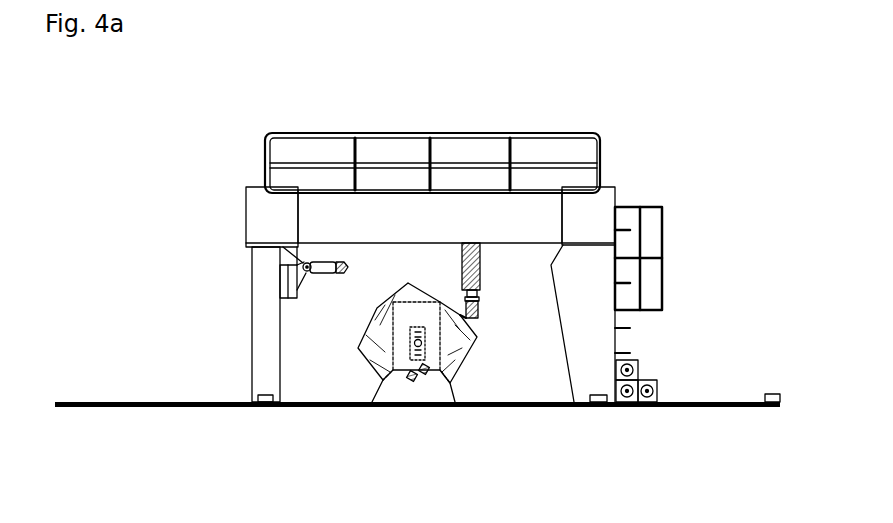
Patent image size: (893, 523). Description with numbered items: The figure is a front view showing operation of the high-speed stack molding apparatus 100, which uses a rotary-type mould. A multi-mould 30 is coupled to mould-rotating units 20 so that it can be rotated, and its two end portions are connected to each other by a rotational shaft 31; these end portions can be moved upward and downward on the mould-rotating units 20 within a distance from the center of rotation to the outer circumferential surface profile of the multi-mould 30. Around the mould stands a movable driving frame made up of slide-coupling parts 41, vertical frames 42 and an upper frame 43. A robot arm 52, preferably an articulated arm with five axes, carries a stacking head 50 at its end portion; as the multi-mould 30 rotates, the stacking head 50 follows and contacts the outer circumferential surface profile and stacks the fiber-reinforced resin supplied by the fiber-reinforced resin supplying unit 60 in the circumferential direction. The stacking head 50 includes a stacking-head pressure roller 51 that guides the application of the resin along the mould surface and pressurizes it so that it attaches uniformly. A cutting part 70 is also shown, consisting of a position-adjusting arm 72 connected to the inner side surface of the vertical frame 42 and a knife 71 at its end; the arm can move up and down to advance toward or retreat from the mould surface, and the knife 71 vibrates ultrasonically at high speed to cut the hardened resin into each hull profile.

The high-speed stack molding apparatus 100 is at (234, 106).
The mould-rotating unit 20 is at (435, 395).
The multi-mould 30 is at (470, 375).
The rotational shaft 31 is at (407, 343).
The slide-coupling part 41 is at (268, 407).
The vertical frame 42 is at (265, 365).
The upper frame 43 is at (533, 207).
The stacking head 50 is at (500, 263).
The stacking-head pressure roller 51 is at (466, 318).
The robot arm 52 is at (463, 247).
The fiber-reinforced resin supplying unit 60 is at (663, 380).
The cutting part 70 is at (275, 285).
The knife 71 is at (348, 263).
The position-adjusting arm 72 is at (308, 263).